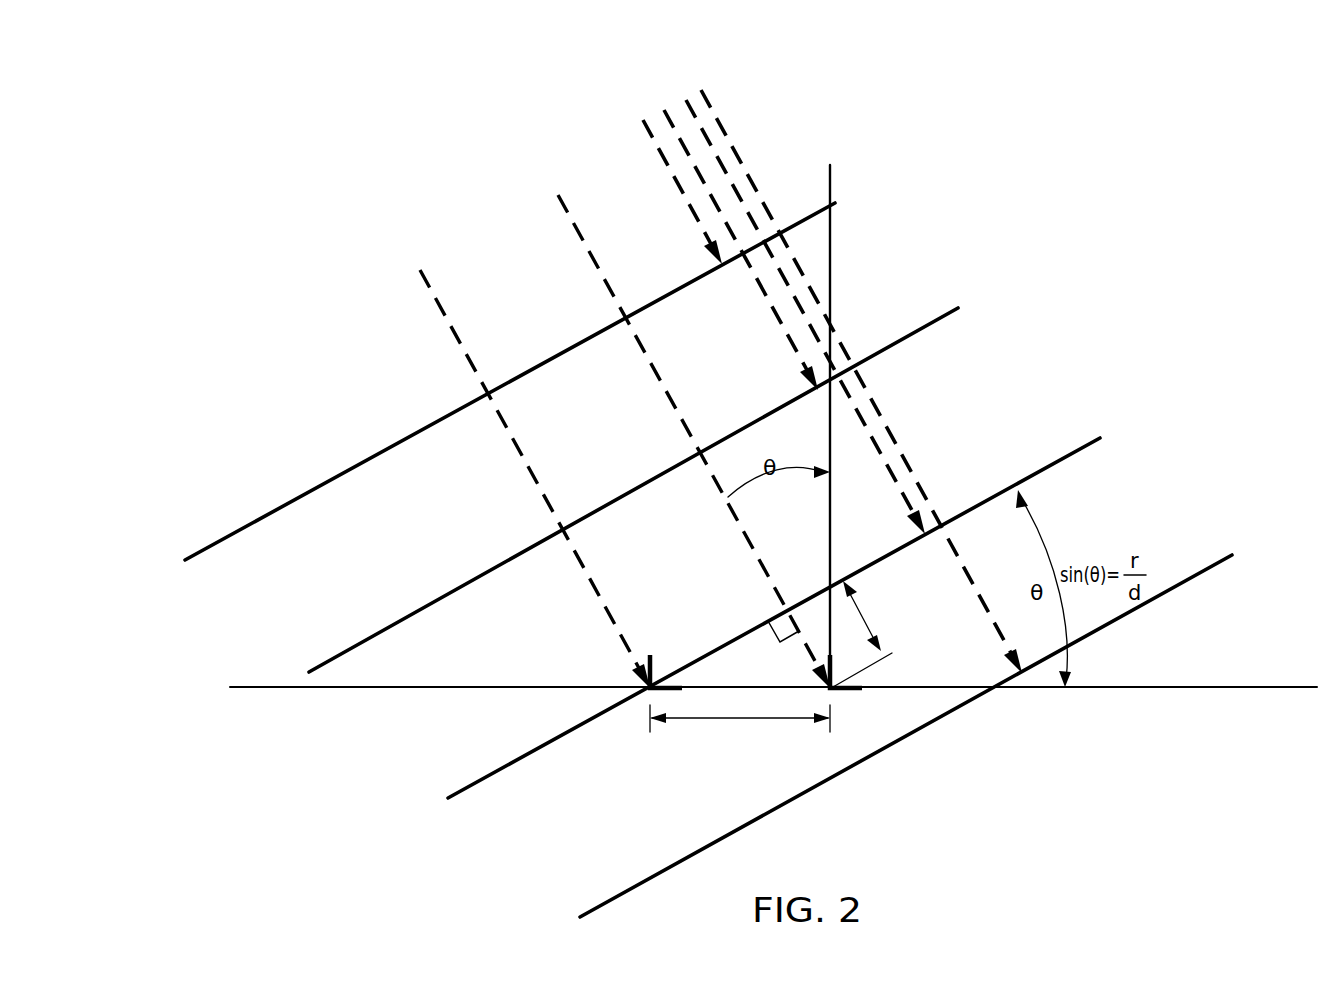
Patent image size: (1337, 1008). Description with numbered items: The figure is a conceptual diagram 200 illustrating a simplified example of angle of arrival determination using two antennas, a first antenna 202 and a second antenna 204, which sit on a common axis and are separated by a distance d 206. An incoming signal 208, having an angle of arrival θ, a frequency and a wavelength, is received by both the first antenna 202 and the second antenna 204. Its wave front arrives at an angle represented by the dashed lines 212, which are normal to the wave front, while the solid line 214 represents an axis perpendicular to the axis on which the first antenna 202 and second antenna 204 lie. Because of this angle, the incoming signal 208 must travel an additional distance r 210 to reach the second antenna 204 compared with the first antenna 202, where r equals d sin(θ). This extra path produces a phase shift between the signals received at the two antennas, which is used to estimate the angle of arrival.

The conceptual diagram 200 is at (1158, 200).
The first antenna 202 is at (653, 666).
The second antenna 204 is at (843, 692).
The distance d 206 is at (692, 724).
The incoming signal 208 is at (698, 83).
The additional distance r 210 is at (862, 613).
The dashed lines 212 is at (465, 288).
The solid line 214 is at (832, 239).